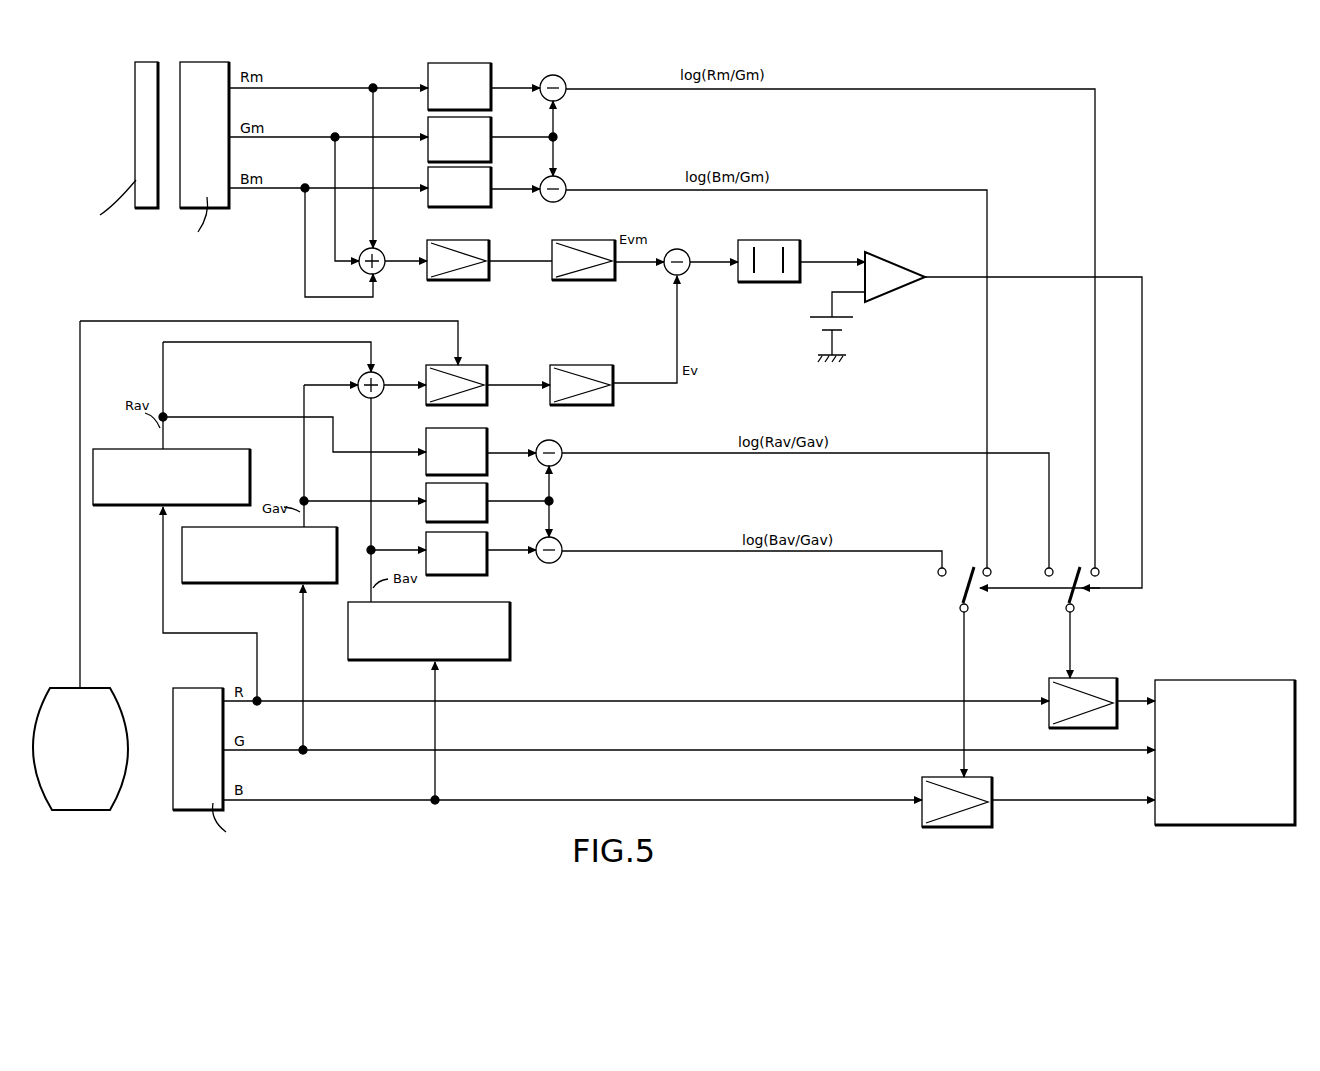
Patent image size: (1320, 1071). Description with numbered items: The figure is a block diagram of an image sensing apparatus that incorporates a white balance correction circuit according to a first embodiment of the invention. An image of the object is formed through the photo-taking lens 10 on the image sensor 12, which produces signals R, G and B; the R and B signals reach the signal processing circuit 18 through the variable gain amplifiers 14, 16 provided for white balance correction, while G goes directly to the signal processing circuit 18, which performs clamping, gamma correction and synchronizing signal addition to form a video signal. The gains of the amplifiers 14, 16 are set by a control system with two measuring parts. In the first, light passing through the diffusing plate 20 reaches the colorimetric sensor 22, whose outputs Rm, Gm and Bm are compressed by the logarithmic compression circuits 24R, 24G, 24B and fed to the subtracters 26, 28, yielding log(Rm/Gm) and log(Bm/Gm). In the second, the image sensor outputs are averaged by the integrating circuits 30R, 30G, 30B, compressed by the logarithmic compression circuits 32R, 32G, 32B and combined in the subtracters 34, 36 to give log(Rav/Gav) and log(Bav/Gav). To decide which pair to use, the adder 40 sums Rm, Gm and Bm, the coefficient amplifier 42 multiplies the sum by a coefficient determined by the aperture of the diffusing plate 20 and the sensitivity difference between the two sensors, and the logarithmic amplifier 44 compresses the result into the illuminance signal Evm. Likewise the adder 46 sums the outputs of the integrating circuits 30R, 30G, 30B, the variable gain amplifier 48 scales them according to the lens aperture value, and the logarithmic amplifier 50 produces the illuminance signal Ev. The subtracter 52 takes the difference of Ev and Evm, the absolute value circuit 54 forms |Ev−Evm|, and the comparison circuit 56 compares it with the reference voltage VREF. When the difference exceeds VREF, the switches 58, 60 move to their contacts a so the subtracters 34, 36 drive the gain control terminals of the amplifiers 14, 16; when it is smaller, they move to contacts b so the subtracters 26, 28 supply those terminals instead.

The photo-taking lens 10 is at (77, 811).
The image sensor 12 is at (197, 811).
The variable gain amplifier 14 is at (1100, 678).
The variable gain amplifier 16 is at (968, 828).
The signal processing circuit 18 is at (1195, 680).
The diffusing plate 20 is at (148, 62).
The colorimetric sensor 22 is at (205, 62).
The logarithmic compression circuit 24R is at (463, 63).
The logarithmic compression circuit 24G is at (491, 132).
The logarithmic compression circuit 24B is at (482, 207).
The subtracter 26 is at (560, 76).
The subtracter 28 is at (558, 202).
The integrating circuit 30R is at (114, 449).
The integrating circuit 30G is at (215, 584).
The integrating circuit 30B is at (510, 650).
The logarithmic compression circuit 32R is at (487, 433).
The logarithmic compression circuit 32G is at (487, 501).
The logarithmic compression circuit 32B is at (487, 562).
The subtracter 34 is at (559, 445).
The subtracter 36 is at (559, 562).
The adder 40 is at (382, 252).
The coefficient amplifier 42 is at (480, 281).
The logarithmic amplifier 44 is at (596, 281).
The adder 46 is at (381, 375).
The variable gain amplifier 48 is at (487, 367).
The logarithmic amplifier 50 is at (605, 365).
The subtracter 52 is at (685, 250).
The absolute value circuit 54 is at (792, 240).
The comparison circuit 56 is at (897, 262).
The switch 58 is at (1067, 590).
The switch 60 is at (955, 588).